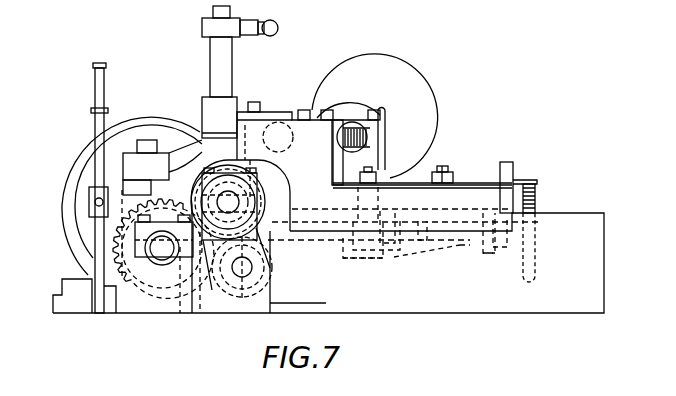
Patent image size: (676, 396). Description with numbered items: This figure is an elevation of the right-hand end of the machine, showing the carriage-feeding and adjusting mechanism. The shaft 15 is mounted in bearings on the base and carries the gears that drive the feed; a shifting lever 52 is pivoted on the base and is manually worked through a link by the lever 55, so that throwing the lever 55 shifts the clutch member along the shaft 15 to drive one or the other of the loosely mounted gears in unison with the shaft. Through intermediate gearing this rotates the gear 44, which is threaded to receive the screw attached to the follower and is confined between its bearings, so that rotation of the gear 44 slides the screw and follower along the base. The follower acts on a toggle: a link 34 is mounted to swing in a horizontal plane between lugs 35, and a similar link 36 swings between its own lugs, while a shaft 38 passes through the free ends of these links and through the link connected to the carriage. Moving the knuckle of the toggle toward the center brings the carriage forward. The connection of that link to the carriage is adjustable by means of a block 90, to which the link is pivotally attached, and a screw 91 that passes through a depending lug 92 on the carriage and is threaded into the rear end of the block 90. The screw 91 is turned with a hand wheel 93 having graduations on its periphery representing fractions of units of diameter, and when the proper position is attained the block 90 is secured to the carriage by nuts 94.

The shaft 15 is at (232, 202).
The link 34 is at (181, 166).
The lugs 35 is at (202, 140).
The link 36 is at (173, 313).
The shaft 38 is at (298, 236).
The gear 44 is at (113, 249).
The shifting lever 52 is at (93, 201).
The lever 55 is at (104, 72).
The block 90 is at (402, 250).
The screw 91 is at (473, 238).
The depending lug 92 is at (502, 258).
The hand wheel 93 is at (537, 198).
The nuts 94 is at (379, 177).